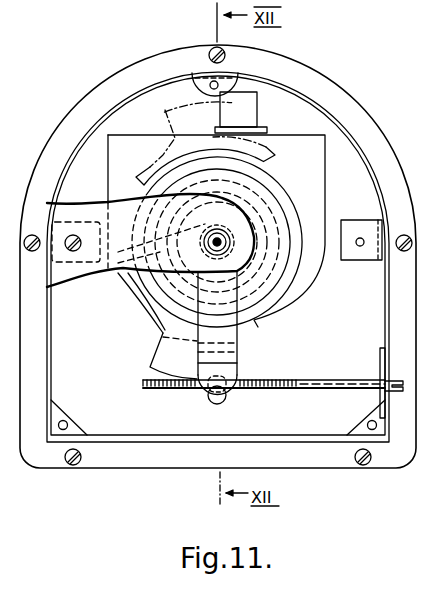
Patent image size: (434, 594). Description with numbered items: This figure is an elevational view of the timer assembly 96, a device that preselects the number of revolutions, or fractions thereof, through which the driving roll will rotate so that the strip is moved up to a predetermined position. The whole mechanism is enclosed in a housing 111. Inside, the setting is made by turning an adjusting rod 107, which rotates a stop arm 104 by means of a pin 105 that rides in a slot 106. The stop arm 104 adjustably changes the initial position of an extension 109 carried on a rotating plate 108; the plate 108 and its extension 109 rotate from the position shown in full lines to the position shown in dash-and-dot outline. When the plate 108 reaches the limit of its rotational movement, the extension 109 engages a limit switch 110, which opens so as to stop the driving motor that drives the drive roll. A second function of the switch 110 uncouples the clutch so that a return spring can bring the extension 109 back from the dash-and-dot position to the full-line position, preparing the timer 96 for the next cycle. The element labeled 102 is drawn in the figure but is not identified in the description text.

The timer assembly 96 is at (331, 50).
The housing 111 is at (335, 118).
The limit switch 110 is at (258, 105).
The disc 102 is at (304, 310).
The plate 108 is at (142, 315).
The extension 109 is at (160, 345).
The stop arm 104 is at (238, 355).
The pin 105 is at (228, 390).
The slot 106 is at (205, 402).
The adjusting rod 107 is at (310, 378).